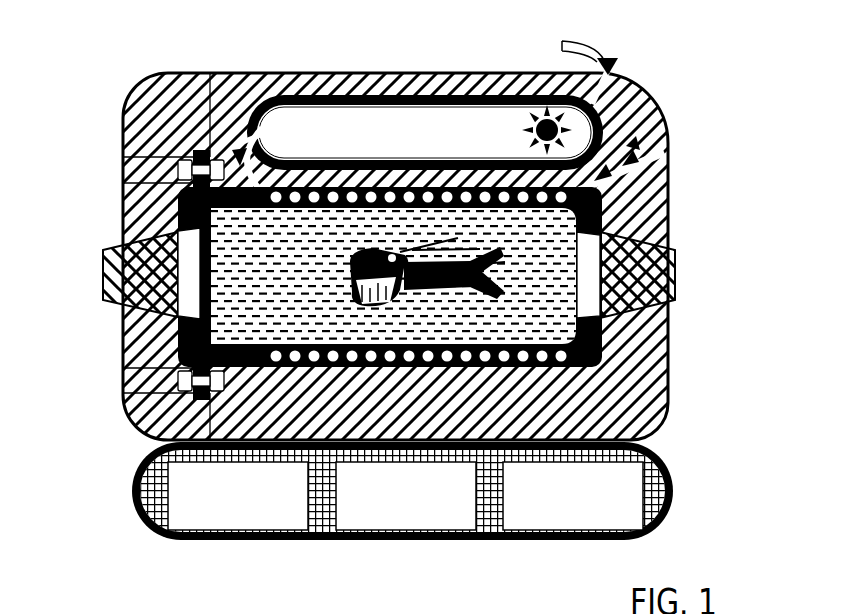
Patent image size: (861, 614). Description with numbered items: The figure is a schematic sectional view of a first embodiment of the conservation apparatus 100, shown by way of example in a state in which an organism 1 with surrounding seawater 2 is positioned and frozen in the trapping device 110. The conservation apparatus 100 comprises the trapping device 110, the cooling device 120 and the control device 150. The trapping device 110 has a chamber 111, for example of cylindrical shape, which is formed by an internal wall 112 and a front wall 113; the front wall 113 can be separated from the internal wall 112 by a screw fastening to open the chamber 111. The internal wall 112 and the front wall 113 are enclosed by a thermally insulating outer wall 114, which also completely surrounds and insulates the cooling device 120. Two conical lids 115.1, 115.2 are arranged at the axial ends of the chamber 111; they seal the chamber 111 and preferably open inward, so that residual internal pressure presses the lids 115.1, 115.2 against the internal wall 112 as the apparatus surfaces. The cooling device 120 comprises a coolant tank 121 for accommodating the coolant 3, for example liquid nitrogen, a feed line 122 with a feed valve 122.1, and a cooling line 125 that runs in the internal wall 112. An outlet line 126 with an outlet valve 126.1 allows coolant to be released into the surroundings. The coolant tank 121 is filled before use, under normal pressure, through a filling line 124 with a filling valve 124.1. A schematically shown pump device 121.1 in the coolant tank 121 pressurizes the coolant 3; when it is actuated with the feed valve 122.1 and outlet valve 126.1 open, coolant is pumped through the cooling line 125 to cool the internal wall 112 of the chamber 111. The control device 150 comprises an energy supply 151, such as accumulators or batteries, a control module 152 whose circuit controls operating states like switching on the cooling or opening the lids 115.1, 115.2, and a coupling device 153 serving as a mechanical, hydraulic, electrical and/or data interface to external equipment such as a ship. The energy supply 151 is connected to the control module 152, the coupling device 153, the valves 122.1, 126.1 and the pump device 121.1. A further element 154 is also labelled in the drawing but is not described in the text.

The conservation apparatus 100 is at (108, 76).
The trapping device 110 is at (400, 277).
The chamber 111 is at (550, 229).
The internal wall 112 is at (255, 368).
The front wall 113 is at (123, 328).
The thermally insulating outer wall 114 is at (137, 418).
The lid 115.1 is at (112, 270).
The lid 115.2 is at (674, 319).
The cooling device 120 is at (487, 99).
The coolant tank 121 is at (408, 90).
The pump device 121.1 is at (433, 132).
The feed line 122 is at (272, 74).
The feed valve 122.1 is at (245, 138).
The filling line 124 is at (563, 40).
The filling valve 124.1 is at (598, 62).
The cooling line 125 is at (565, 357).
The outlet line 126 is at (668, 148).
The outlet valve 126.1 is at (632, 140).
The control device 150 is at (461, 491).
The energy supply 151 is at (238, 496).
The control module 152 is at (406, 496).
The coupling device 153 is at (573, 496).
The base connector 154 is at (271, 606).
The organism 1 is at (409, 288).
The seawater 2 is at (285, 289).
The coolant 3 is at (350, 144).